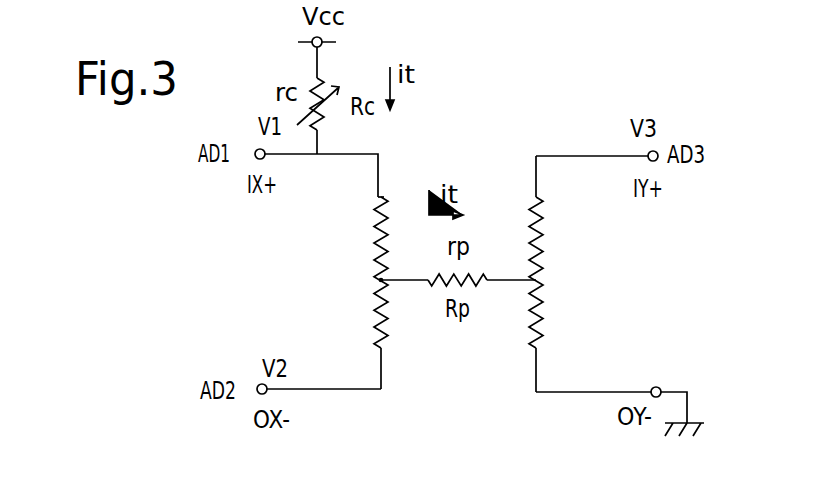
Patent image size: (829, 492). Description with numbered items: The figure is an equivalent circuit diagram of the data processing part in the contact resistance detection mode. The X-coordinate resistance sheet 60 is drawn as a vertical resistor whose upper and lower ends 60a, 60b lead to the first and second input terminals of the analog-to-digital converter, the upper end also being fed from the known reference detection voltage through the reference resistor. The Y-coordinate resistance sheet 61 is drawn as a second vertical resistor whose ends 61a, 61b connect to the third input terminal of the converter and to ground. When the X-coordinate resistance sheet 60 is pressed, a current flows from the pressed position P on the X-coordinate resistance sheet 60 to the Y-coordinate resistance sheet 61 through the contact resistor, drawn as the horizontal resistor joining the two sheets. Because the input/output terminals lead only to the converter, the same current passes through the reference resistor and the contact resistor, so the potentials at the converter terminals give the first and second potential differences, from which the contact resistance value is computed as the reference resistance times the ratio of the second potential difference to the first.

The X-coordinate resistance sheet 60 is at (378, 322).
The first end of resistor 60 60a is at (388, 197).
The second end of resistor 60 60b is at (385, 350).
The Y-coordinate resistance sheet 61 is at (543, 232).
The first end of resistor 61 61a is at (538, 197).
The second end of resistor 61 61b is at (536, 348).
The pressed position P is at (378, 280).